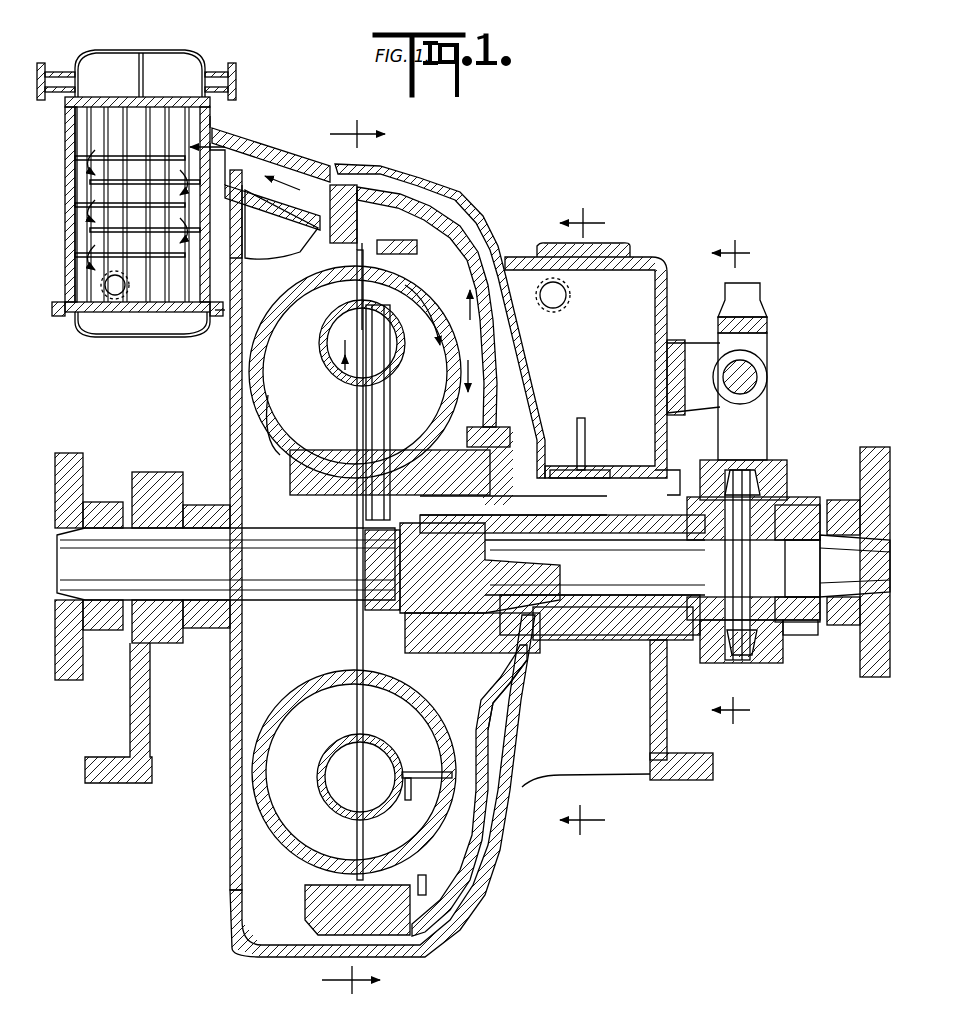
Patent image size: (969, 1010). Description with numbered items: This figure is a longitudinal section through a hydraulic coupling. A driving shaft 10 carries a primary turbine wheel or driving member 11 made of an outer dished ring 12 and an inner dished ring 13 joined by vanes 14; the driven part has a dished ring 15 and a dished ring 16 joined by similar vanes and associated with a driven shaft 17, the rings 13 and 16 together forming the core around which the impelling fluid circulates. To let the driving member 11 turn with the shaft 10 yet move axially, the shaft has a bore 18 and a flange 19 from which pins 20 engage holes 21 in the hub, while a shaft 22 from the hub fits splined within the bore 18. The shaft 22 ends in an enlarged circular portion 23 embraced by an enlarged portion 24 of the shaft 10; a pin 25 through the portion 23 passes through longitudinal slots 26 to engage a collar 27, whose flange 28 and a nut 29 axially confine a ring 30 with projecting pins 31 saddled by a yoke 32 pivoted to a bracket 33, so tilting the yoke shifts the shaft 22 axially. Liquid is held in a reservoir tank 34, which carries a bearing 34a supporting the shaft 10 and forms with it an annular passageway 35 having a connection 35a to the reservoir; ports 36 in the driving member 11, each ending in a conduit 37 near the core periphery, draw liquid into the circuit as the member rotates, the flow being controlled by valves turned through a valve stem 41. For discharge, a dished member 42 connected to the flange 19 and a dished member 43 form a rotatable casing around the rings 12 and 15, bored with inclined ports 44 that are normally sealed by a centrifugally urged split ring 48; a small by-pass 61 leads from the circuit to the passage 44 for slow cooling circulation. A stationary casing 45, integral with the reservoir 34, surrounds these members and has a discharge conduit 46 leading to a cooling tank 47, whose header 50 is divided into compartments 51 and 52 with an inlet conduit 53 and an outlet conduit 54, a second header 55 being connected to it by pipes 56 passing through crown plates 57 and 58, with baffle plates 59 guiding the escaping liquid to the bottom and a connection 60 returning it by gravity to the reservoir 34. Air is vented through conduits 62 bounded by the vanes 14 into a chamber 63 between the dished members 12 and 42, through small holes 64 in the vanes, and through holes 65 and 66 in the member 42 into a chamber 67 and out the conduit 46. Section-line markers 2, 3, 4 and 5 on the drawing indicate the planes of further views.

The driving shaft 10 is at (472, 615).
The primary turbine wheel or driving member 11 is at (422, 349).
The outer dished ring 12 is at (448, 372).
The inner dished ring 13 is at (400, 345).
The vanes 14 is at (435, 300).
The dished ring 15 is at (285, 430).
The dished ring 16 is at (328, 332).
The driven shaft 17 is at (226, 564).
The bore 18 is at (592, 640).
The flange 19 is at (505, 695).
The pins 20 is at (430, 660).
The holes 21 is at (410, 655).
The shaft 22 is at (595, 567).
The enlarged circular portion 23 is at (854, 566).
The enlarged portion 24 is at (805, 510).
The pin 25 is at (738, 470).
The longitudinal slots 26 is at (788, 505).
The collar 27 is at (700, 495).
The flange 28 is at (703, 663).
The nut 29 is at (800, 640).
The ring 30 is at (745, 663).
The projecting pins 31 is at (700, 620).
The yoke 32 is at (768, 408).
The bracket 33 is at (690, 340).
The reservoir tank 34 is at (640, 268).
The bearing 34a is at (640, 642).
The annular passageway 35 is at (587, 498).
The connection 35a is at (600, 478).
The ports 36 is at (492, 427).
The conduit 37 is at (364, 395).
The valve stem 41 is at (588, 425).
The dished member 42 is at (487, 226).
The dished member 43 is at (292, 255).
The ports or conduits 44 is at (372, 215).
The stationary casing 45 is at (452, 196).
The discharge conduit 46 is at (262, 152).
The cooling tank 47 is at (68, 232).
The split ring 48 is at (418, 258).
The header 50 is at (142, 52).
The compartment 51 is at (108, 76).
The compartment 52 is at (172, 76).
The inlet conduit 53 is at (58, 72).
The outlet conduit 54 is at (236, 80).
The header 55 is at (148, 331).
The pipes 56 is at (72, 282).
The crown plate 57 is at (190, 53).
The crown plate 58 is at (108, 300).
The baffle plates 59 is at (137, 156).
The connection 60 is at (542, 305).
The by-pass 61 is at (352, 250).
The conduits 62 is at (440, 770).
The chamber 63 is at (465, 868).
The small holes 64 is at (412, 790).
The hole 65 is at (535, 772).
The hole 66 is at (428, 890).
The chamber 67 is at (503, 847).
The section line 2 is at (342, 347).
The section line 3 is at (582, 524).
The section line 4 is at (353, 559).
The section line 5 is at (736, 480).